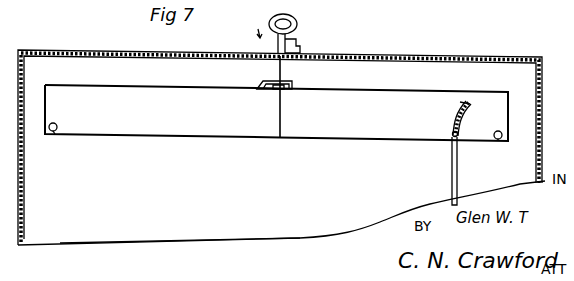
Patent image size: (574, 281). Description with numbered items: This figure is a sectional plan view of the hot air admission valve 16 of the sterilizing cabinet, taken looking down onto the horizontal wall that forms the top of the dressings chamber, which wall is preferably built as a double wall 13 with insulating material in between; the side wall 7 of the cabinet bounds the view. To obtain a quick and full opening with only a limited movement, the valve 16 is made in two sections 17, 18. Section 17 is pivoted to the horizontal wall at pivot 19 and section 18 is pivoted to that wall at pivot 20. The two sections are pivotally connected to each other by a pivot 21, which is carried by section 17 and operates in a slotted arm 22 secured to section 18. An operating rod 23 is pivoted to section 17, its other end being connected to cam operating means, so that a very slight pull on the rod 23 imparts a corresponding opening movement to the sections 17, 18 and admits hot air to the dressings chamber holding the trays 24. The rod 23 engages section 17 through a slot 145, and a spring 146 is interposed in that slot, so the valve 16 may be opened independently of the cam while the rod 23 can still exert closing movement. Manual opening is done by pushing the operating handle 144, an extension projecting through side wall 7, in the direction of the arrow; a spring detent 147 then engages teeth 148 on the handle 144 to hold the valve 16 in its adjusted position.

The side wall 7 is at (396, 57).
The double wall 13 is at (233, 211).
The hot air admission valve 16 is at (250, 150).
The valve section 17 is at (372, 128).
The valve section 18 is at (142, 129).
The pivot 19 is at (500, 148).
The pivot 20 is at (56, 134).
The pivot 21 is at (277, 89).
The slotted arm 22 is at (297, 86).
The operating rod 23 is at (452, 164).
The trays 24 is at (454, 130).
The manually operable extension 144 is at (296, 26).
The slot 145 is at (460, 101).
The spring 146 is at (503, 84).
The spring detent 147 is at (293, 45).
The teeth 148 is at (272, 47).